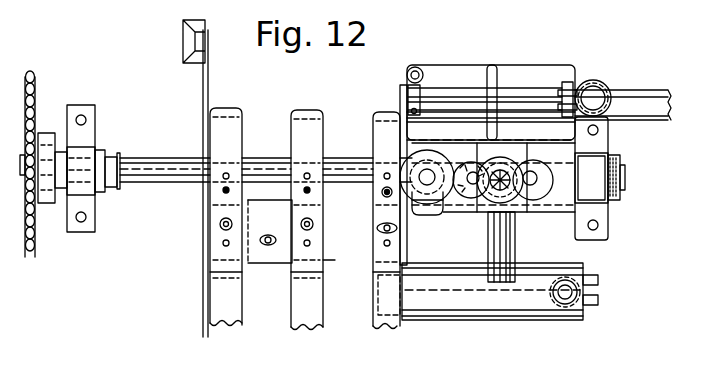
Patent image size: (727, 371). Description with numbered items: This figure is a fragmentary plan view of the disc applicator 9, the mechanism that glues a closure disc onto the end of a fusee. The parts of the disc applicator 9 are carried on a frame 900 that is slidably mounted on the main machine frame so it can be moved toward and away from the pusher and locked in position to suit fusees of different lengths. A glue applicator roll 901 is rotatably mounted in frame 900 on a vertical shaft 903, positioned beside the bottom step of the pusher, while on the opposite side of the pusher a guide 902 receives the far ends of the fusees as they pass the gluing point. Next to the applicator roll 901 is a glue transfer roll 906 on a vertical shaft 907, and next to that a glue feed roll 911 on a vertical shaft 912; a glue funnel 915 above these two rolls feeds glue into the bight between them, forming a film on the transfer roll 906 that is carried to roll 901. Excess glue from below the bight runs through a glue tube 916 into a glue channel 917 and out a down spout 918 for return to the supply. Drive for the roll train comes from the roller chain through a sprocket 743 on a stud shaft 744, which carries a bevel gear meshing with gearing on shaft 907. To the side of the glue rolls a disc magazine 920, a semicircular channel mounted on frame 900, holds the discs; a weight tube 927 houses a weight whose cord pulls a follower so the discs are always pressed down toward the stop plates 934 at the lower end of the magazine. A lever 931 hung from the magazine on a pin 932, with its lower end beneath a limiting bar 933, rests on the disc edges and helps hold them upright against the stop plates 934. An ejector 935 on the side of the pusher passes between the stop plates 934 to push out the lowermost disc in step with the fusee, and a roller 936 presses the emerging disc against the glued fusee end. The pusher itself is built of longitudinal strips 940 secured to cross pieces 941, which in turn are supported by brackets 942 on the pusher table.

The disc applicator 9 is at (621, 214).
The sprocket 743 is at (31, 257).
The stud shaft 744 is at (152, 158).
The frame 900 is at (600, 236).
The glue applicator roll 901 is at (433, 197).
The guide 902 is at (209, 213).
The vertical shaft 903 is at (425, 188).
The glue transfer roll 906 is at (468, 162).
The vertical shaft 907 is at (467, 186).
The glue feed roll 911 is at (537, 192).
The vertical shaft 912 is at (535, 200).
The glue funnel 915 is at (483, 205).
The glue tube 916 is at (515, 252).
The glue channel 917 is at (458, 322).
The down spout 918 is at (565, 302).
The disc magazine 920 is at (655, 120).
The weight tube 927 is at (612, 86).
The lever 931 is at (520, 85).
The pin 932 is at (577, 82).
The bar 933 is at (420, 100).
The stop plates 934 is at (402, 95).
The ejector 935 is at (403, 132).
The roller 936 is at (414, 62).
The strips 940 is at (215, 326).
The cross pieces 941 is at (335, 262).
The brackets 942 is at (282, 265).